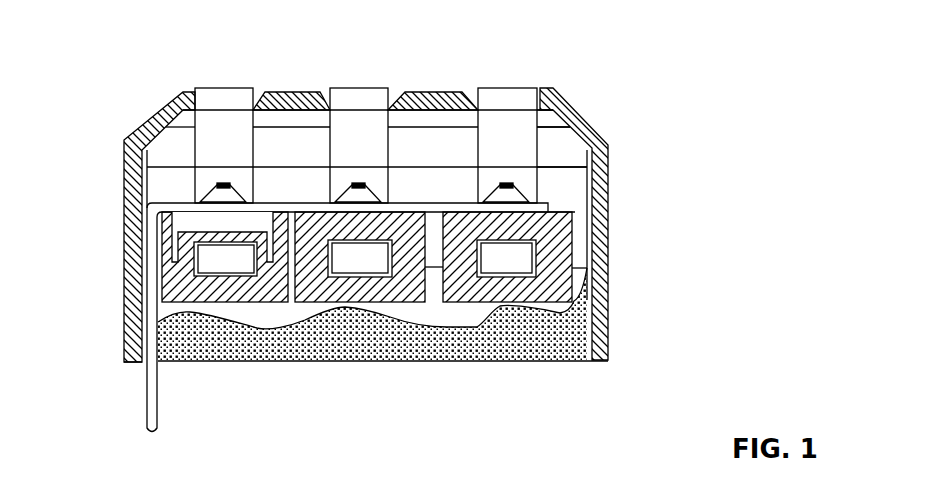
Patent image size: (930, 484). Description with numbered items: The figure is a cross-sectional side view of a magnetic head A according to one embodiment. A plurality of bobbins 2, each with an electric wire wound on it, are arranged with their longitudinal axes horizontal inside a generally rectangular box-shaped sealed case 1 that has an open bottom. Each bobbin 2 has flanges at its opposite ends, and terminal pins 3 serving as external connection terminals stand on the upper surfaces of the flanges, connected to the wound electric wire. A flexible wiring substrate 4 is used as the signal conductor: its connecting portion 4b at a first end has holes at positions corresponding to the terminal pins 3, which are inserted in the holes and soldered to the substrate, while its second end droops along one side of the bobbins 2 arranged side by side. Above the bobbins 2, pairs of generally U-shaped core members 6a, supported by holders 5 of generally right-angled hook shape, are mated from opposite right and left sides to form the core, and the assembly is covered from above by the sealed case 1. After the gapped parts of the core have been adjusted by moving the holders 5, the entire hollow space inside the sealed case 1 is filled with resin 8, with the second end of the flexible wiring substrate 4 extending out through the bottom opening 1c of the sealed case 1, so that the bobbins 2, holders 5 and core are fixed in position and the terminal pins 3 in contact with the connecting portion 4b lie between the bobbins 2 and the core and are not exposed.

The sealed case 1 is at (150, 110).
The bottom opening 1c is at (573, 343).
The bobbin 2 is at (183, 293).
The terminal pin 3 is at (218, 184).
The flexible wiring substrate 4 is at (416, 210).
The connecting portion 4b is at (278, 212).
The holder 5 is at (557, 145).
The core member 6a is at (230, 88).
The resin 8 is at (260, 348).
The magnetic head A is at (620, 141).